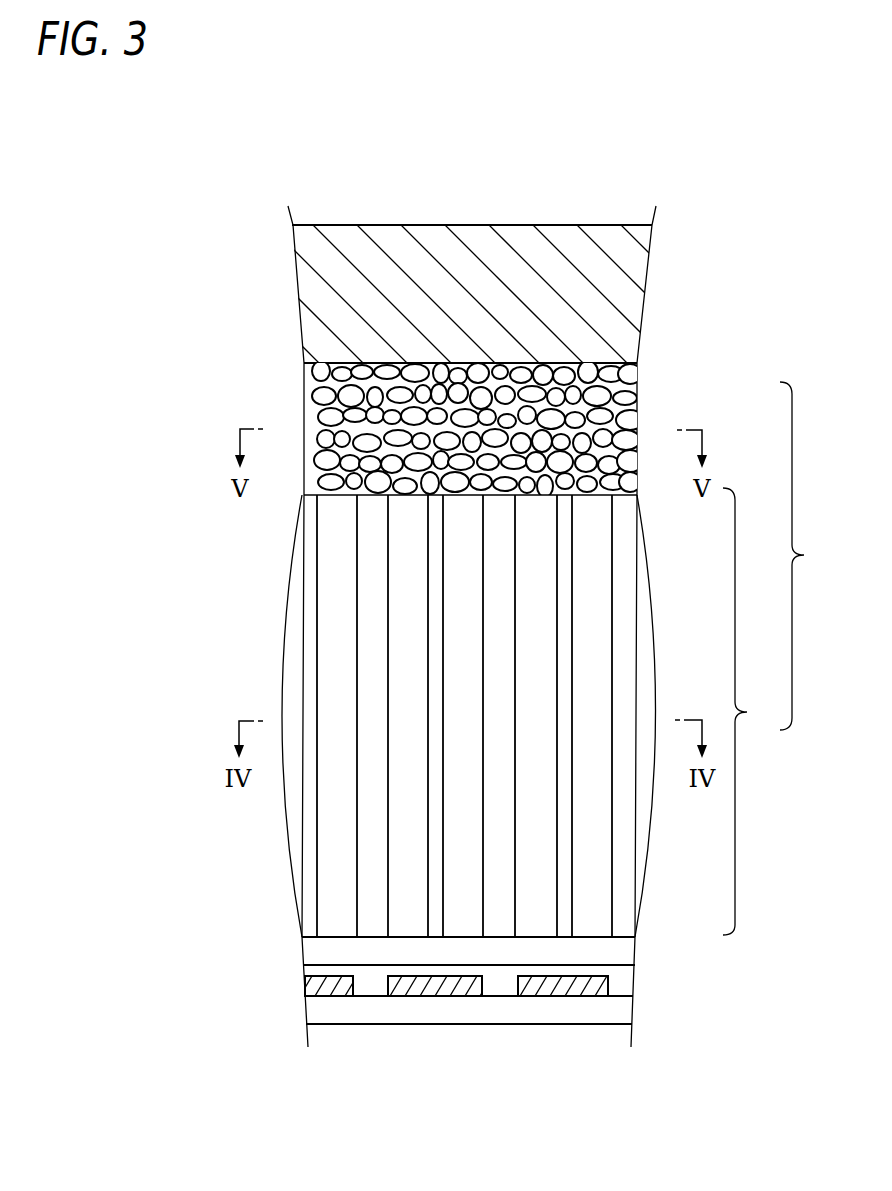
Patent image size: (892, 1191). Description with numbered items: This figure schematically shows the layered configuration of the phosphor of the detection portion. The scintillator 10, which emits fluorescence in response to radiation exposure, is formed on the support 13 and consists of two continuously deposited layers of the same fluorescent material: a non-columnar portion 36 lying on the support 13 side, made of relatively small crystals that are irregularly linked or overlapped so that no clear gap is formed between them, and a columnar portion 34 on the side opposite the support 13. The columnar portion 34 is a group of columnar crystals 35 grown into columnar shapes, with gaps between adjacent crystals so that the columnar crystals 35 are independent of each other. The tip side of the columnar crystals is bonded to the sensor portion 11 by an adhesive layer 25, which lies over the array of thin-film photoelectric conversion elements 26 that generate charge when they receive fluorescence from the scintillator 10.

The scintillator 10 is at (809, 556).
The sensor portion 11 is at (684, 1041).
The support 13 is at (623, 303).
The adhesive layer 25 is at (627, 952).
The photoelectric conversion element 26 is at (603, 983).
The columnar portion 34 is at (753, 711).
The columnar crystal 35 is at (535, 627).
The non-columnar portion 36 is at (645, 388).